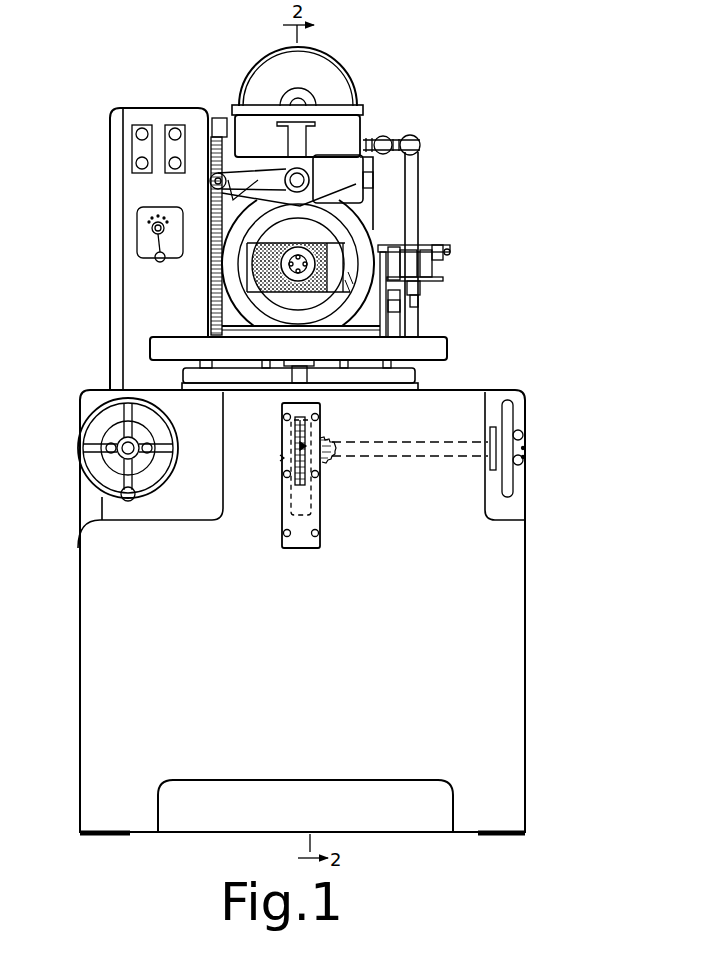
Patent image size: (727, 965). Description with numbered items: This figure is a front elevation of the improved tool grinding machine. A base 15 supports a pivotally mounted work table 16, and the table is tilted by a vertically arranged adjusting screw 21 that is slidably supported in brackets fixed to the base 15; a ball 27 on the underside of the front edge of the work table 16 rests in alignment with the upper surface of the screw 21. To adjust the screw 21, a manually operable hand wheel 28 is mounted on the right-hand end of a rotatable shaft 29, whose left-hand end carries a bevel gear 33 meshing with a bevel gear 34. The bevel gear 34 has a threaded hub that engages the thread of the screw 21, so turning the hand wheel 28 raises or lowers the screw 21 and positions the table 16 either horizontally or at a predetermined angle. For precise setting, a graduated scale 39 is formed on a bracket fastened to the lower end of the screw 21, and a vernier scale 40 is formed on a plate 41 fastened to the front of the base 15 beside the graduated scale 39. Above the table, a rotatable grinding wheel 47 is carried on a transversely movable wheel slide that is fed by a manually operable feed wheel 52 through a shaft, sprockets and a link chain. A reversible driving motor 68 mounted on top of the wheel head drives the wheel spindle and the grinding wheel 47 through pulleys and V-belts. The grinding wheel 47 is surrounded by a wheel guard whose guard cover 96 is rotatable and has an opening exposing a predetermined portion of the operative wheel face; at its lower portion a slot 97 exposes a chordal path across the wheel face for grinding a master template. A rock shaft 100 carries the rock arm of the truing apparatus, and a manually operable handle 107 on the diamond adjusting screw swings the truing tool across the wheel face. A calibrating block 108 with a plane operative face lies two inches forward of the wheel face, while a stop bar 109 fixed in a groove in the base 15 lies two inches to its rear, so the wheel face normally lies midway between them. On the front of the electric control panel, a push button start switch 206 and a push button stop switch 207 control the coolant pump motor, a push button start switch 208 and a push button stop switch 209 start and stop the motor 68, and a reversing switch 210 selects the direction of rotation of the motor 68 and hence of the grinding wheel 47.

The base 15 is at (83, 644).
The work table 16 is at (448, 346).
The adjusting screw 21 is at (293, 374).
The ball 27 is at (297, 360).
The hand wheel 28 is at (513, 412).
The rotatable shaft 29 is at (412, 456).
The bevel gear 33 is at (330, 440).
The bevel gear 34 is at (281, 458).
The graduated scale 39 is at (295, 465).
The vernier scale 40 is at (306, 452).
The plate 41 is at (321, 512).
The grinding wheel 47 is at (258, 270).
The feed wheel 52 is at (80, 445).
The driving motor 68 is at (258, 78).
The guard cover 96 is at (250, 300).
The slot 97 is at (333, 276).
The rock shaft 100 is at (293, 172).
The handle 107 is at (210, 182).
The calibrating block 108 is at (350, 160).
The stop bar 109 is at (211, 333).
The push button start switch 206 is at (175, 128).
The push button stop switch 207 is at (181, 160).
The push button start switch 208 is at (142, 128).
The push button stop switch 209 is at (142, 160).
The reversing switch 210 is at (145, 240).